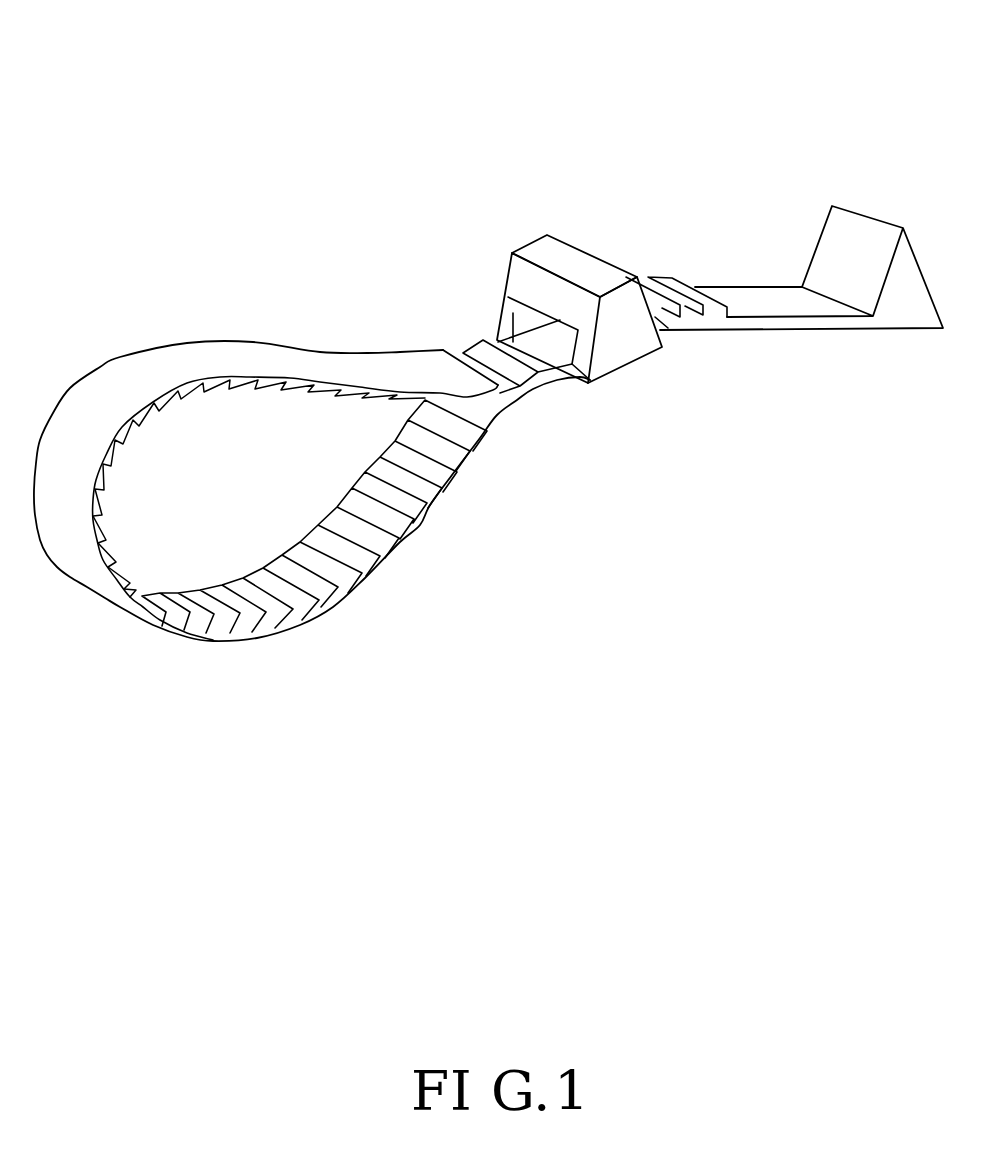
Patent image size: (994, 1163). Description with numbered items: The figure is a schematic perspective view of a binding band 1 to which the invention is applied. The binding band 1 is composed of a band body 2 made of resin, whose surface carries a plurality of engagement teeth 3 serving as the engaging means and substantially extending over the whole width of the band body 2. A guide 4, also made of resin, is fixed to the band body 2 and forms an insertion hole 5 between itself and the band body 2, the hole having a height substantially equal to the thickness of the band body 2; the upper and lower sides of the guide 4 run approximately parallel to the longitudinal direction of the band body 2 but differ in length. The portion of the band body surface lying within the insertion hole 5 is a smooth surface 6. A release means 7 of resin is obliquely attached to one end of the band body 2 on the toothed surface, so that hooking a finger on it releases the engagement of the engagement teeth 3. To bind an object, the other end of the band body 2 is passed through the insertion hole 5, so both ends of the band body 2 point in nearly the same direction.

The binding band 1 is at (246, 174).
The band body 2 is at (122, 380).
The engagement teeth 3 is at (335, 597).
The guide 4 is at (577, 242).
The insertion hole 5 is at (506, 300).
The smooth surface 6 is at (558, 333).
The release means 7 is at (771, 287).